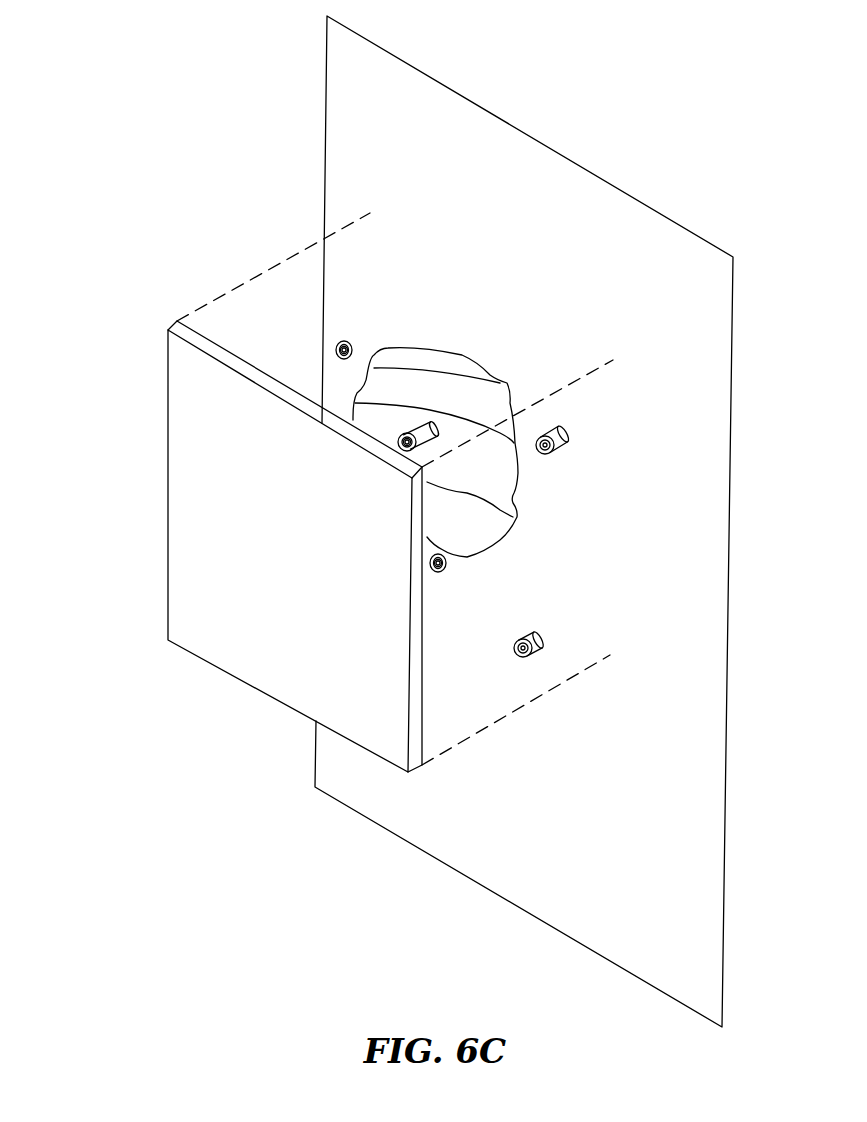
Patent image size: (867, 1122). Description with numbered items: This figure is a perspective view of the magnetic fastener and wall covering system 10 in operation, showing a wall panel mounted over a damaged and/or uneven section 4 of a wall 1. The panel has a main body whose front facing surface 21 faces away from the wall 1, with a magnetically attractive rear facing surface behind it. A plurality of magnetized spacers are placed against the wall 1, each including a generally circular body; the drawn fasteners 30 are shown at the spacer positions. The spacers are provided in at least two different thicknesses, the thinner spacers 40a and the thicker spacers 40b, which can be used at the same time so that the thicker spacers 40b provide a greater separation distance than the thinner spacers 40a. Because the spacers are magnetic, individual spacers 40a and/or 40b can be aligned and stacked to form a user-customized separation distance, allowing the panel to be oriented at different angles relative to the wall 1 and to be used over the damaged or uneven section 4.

The mounting assembly 10 is at (110, 133).
The wall 1 is at (500, 217).
The front facing surface 21 is at (266, 534).
The damaged and/or uneven section 4 is at (495, 482).
The washer 30 is at (335, 350).
The thinner spacers 40a is at (341, 345).
The thicker spacers 40b is at (416, 427).